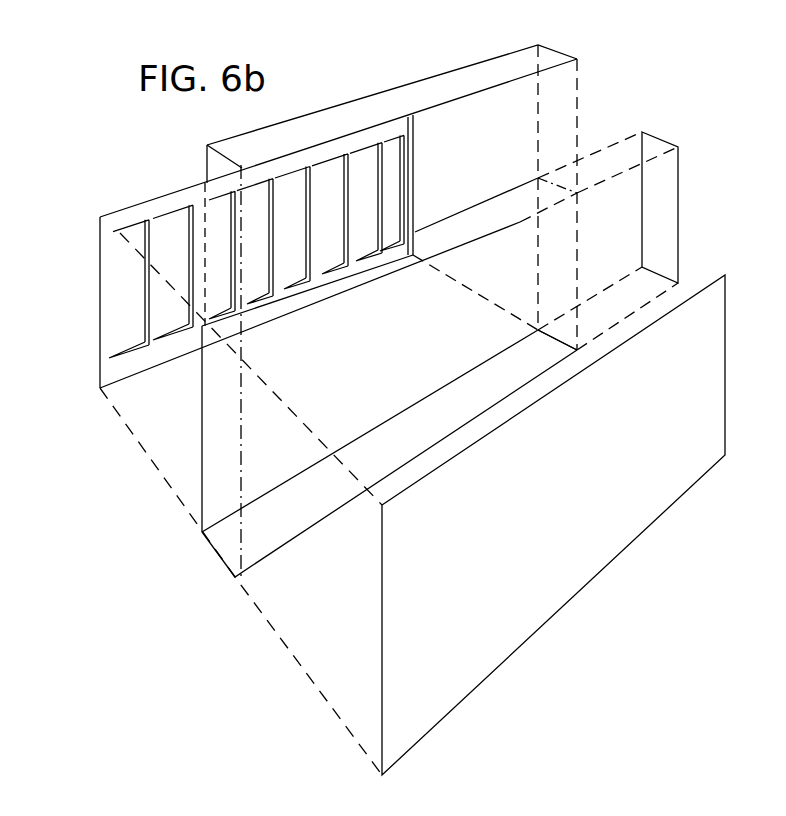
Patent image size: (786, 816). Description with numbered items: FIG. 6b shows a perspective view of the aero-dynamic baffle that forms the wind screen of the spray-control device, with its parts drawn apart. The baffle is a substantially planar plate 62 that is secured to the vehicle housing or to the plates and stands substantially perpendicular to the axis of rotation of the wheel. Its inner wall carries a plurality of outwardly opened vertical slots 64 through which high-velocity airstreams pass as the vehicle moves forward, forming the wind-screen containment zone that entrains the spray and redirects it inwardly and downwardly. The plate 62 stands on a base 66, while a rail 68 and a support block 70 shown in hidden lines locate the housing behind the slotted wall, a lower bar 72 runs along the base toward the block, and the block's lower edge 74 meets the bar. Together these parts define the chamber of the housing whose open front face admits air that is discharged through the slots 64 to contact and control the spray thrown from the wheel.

The slotted plate 62 is at (116, 212).
The fin / slot 64 is at (184, 214).
The base 66 is at (728, 403).
The rail 68 is at (620, 156).
The support block 70 is at (553, 56).
The bar 72 is at (228, 553).
The block bottom edge 74 is at (548, 331).